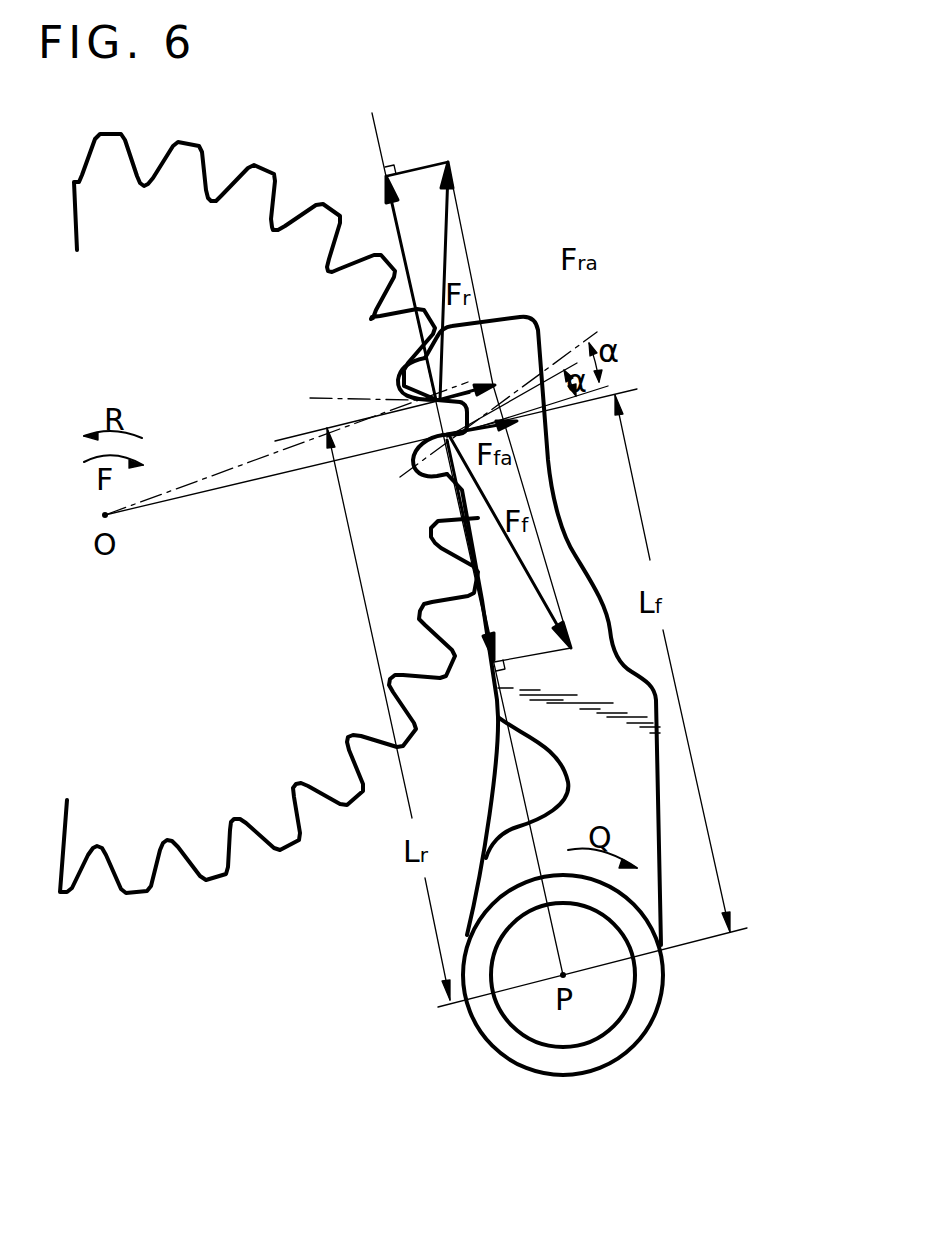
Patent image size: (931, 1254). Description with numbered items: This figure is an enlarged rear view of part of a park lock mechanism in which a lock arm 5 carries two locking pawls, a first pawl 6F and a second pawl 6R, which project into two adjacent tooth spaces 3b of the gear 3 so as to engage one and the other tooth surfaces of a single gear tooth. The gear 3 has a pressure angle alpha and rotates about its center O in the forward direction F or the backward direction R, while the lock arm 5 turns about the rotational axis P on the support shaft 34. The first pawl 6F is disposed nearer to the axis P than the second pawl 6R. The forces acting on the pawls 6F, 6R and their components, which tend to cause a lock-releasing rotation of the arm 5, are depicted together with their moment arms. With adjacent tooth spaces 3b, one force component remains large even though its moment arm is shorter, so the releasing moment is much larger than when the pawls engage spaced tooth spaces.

The gear 3 is at (269, 543).
The tooth space 3b is at (283, 206).
The lock arm 5 is at (567, 580).
The second pawl 6R is at (418, 372).
The first pawl 6F is at (432, 466).
The support shaft 34 is at (533, 1005).